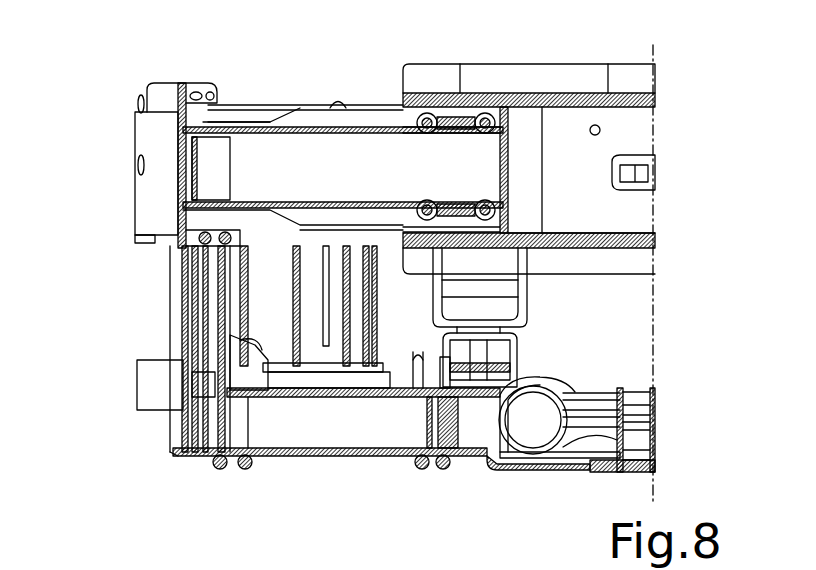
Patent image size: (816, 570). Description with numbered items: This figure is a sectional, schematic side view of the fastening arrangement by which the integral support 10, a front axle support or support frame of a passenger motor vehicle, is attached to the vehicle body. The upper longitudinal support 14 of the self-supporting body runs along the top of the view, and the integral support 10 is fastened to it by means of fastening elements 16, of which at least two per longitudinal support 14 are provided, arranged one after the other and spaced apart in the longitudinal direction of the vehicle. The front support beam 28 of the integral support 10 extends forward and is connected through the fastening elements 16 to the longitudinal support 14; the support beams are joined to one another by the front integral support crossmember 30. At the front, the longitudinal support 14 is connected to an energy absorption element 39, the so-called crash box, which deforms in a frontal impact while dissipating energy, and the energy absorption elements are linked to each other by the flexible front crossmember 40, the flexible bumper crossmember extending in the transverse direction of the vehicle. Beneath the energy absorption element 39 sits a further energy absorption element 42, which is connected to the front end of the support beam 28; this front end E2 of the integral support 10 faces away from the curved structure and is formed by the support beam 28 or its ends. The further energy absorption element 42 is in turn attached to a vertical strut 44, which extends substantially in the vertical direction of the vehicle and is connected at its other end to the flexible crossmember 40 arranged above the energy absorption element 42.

The integral support 10 is at (489, 470).
The longitudinal support 14 is at (630, 136).
The fastening element 16 is at (520, 355).
The front support beam 28 is at (603, 450).
The integral support crossmember 30 is at (645, 452).
The energy absorption element 39 is at (352, 150).
The flexible front crossmember 40 is at (148, 188).
The further energy absorption element 42 is at (288, 432).
The vertical strut 44 is at (178, 308).
The front end E2 is at (418, 473).